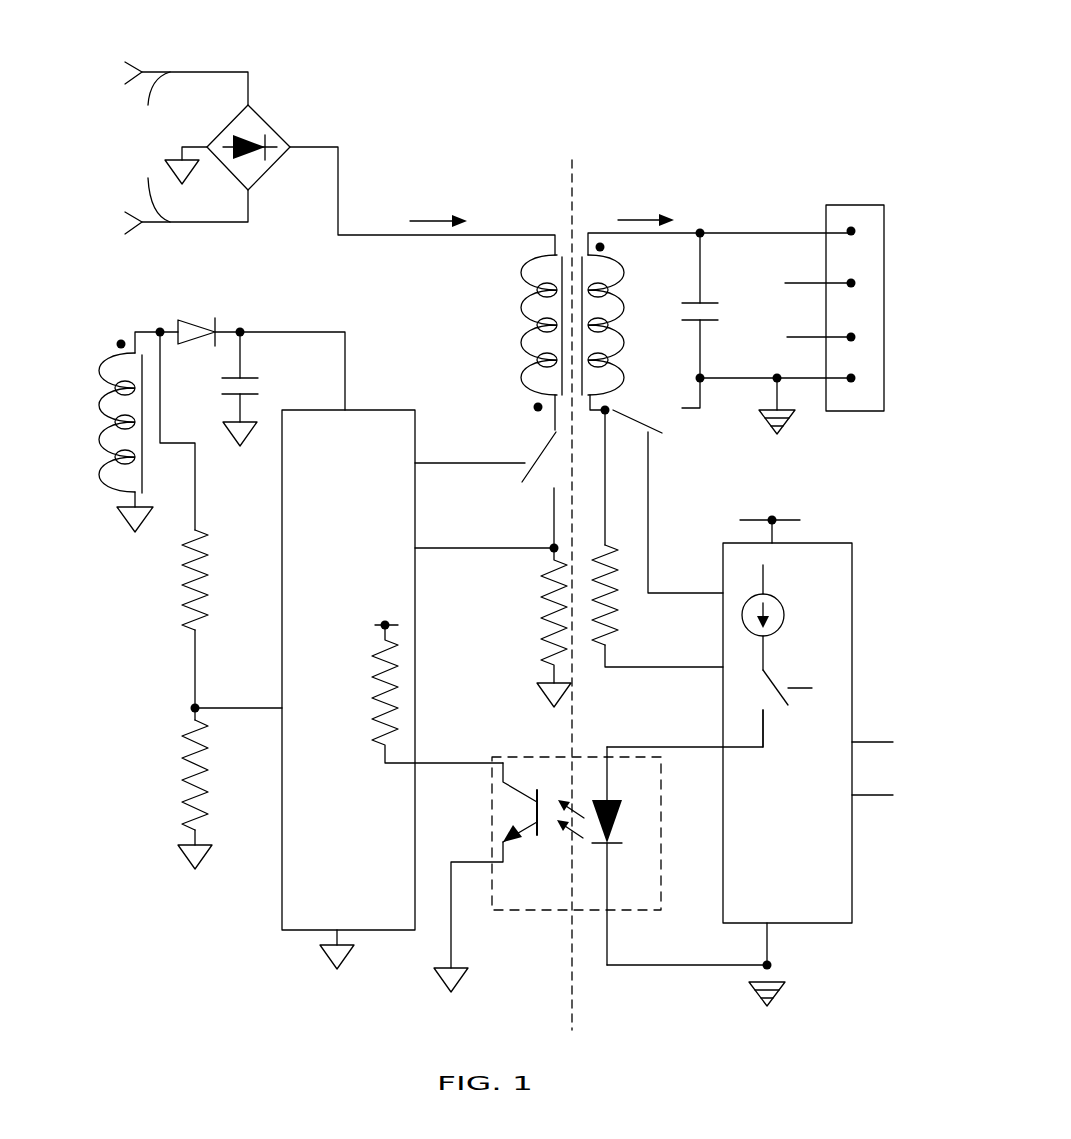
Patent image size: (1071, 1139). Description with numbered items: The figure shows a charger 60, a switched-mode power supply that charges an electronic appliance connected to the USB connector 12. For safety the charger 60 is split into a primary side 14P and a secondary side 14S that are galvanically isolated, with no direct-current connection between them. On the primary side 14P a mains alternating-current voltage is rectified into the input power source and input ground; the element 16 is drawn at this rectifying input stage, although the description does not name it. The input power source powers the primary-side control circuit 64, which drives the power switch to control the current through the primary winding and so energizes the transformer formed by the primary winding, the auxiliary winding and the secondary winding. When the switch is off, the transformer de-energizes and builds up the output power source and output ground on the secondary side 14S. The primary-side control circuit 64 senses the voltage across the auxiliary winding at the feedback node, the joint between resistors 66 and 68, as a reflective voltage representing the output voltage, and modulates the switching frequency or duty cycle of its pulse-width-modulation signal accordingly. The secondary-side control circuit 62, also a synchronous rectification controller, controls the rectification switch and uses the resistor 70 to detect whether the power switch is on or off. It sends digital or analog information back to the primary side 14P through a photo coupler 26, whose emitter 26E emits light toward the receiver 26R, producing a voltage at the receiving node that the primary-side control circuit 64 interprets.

The charger 60 is at (536, 84).
The bridge rectifier 16 is at (258, 117).
The primary side 14P is at (555, 167).
The secondary side 14S is at (585, 167).
The universal serial bus (USB) connector 12 is at (845, 205).
The primary-side control circuit 64 is at (361, 563).
The secondary-side control circuit 62 is at (802, 910).
The resistor 66 is at (180, 580).
The resistor 68 is at (181, 775).
The resistor 70 is at (618, 599).
The photo coupler 26 is at (540, 912).
The receiver 26R is at (495, 865).
The emitter 26E is at (622, 856).